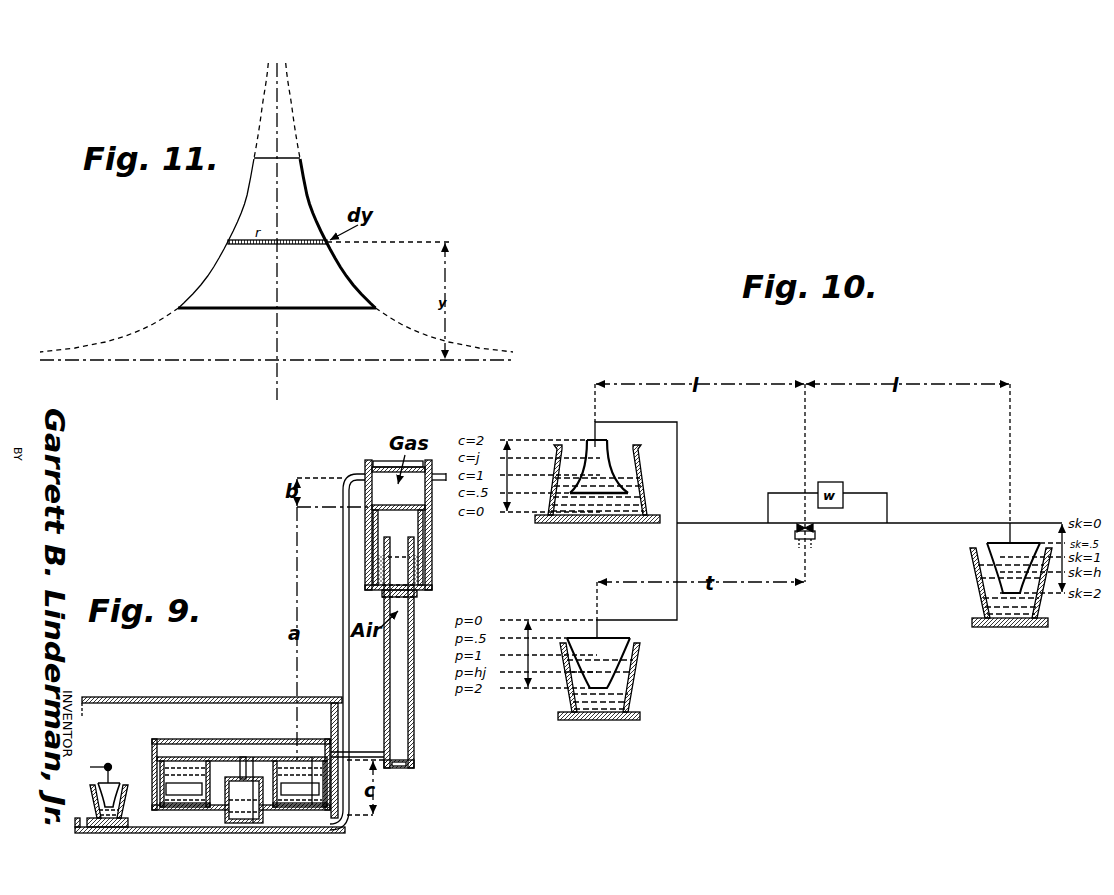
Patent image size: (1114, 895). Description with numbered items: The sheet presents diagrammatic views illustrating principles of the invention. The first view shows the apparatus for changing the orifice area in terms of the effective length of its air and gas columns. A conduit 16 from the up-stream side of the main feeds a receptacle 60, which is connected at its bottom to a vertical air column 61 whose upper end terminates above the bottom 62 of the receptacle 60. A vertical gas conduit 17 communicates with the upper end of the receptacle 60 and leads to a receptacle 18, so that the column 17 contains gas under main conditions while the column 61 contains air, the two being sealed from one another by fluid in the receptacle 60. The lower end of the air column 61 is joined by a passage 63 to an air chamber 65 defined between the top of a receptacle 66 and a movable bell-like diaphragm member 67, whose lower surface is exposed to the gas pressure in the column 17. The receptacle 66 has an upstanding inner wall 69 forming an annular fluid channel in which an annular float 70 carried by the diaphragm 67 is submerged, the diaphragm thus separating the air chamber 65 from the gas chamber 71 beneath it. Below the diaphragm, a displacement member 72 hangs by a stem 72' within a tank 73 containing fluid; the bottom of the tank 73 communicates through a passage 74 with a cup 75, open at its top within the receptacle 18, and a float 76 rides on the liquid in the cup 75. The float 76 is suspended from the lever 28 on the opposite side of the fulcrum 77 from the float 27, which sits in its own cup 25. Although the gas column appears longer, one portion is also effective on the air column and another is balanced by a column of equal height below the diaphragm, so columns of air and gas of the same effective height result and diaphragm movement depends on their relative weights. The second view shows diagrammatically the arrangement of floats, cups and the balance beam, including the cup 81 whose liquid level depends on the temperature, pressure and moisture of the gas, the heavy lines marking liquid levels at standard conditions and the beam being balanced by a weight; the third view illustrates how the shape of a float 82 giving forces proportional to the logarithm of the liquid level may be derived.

In FIG. 9, the conduit 16 is at (438, 480).
In FIG. 9, the conduit 17 is at (343, 576).
In FIG. 9, the receptacle 18 is at (180, 697).
In FIG. 10, the base plate of vessel 25 is at (572, 690).
In FIG. 10, the float 27 is at (633, 668).
In FIG. 10, the lever 28 is at (922, 525).
In FIG. 9, the lever 28 is at (101, 765).
In FIG. 9, the receptacle 60 is at (432, 530).
In FIG. 9, the air column 61 is at (385, 665).
In FIG. 9, the bottom of the receptacle 62 is at (425, 580).
In FIG. 9, the conduit or passage 63 is at (368, 743).
In FIG. 9, the air chamber 65 is at (276, 757).
In FIG. 9, the receptacle 66 is at (183, 740).
In FIG. 9, the diaphragm member 67 is at (312, 757).
In FIG. 9, the inner wall 69 is at (283, 806).
In FIG. 9, the annular float 70 is at (188, 800).
In FIG. 9, the gas chamber 71 is at (172, 757).
In FIG. 9, the float or displacement member 72 is at (244, 818).
In FIG. 9, the stem 72' is at (227, 746).
In FIG. 9, the tank or receptacle 73 is at (253, 757).
In FIG. 9, the conduit or passage 74 is at (140, 826).
In FIG. 10, the cup 75 is at (1010, 627).
In FIG. 9, the cup 75 is at (92, 803).
In FIG. 10, the float 76 is at (1000, 566).
In FIG. 9, the float 76 is at (114, 787).
In FIG. 10, the fulcrum 77 is at (795, 531).
In FIG. 10, the cup 81 is at (584, 521).
In FIG. 11, the flared tube profile 82 is at (250, 197).
In FIG. 10, the flared tube profile 82 is at (593, 447).